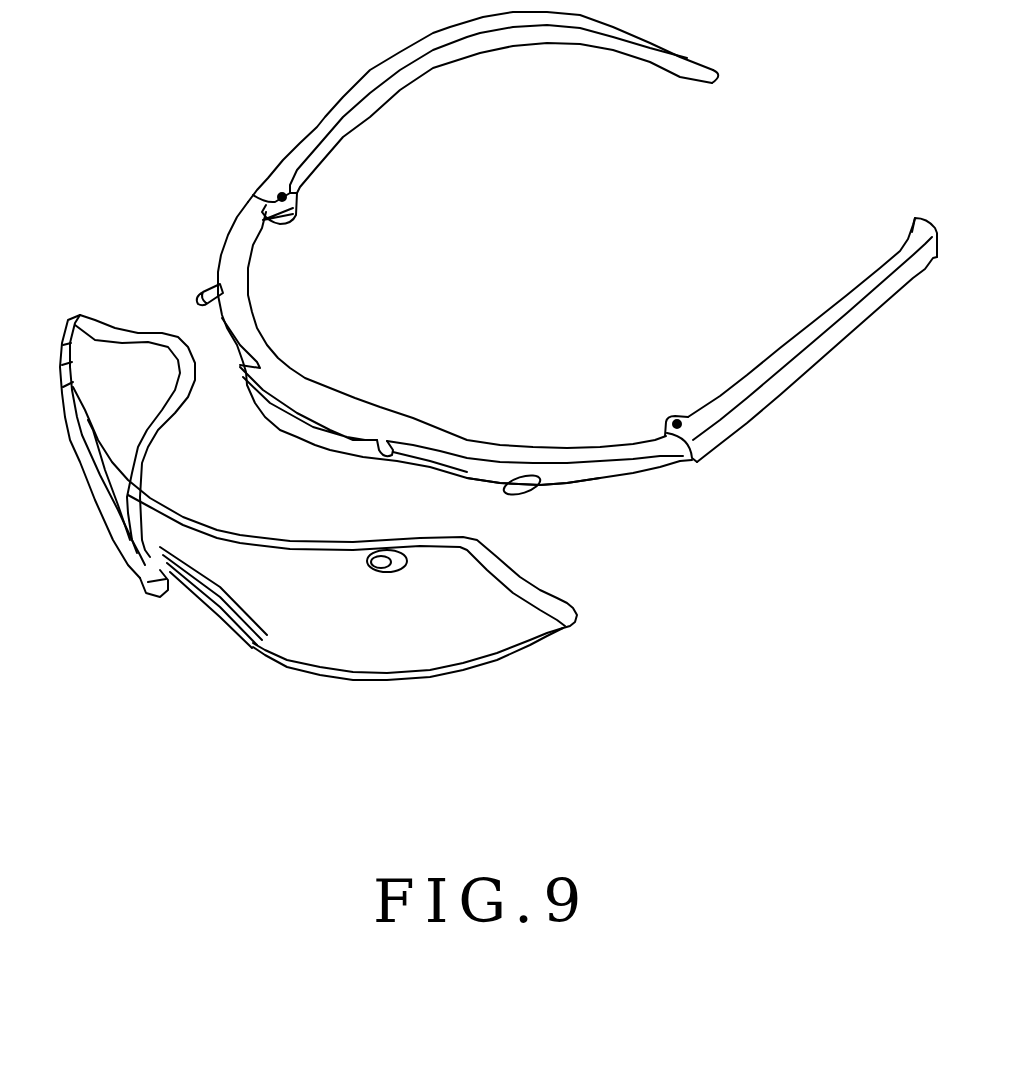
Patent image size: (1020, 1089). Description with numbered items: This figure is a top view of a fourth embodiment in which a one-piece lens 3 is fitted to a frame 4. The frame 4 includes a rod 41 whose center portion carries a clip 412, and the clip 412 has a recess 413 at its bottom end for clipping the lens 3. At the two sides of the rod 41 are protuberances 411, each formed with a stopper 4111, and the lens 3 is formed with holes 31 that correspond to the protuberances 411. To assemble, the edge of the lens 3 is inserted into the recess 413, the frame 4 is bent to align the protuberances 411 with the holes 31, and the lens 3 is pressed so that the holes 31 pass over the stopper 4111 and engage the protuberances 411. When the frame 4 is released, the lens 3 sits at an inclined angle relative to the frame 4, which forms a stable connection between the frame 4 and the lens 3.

The lens 3 is at (497, 613).
The holes 31 is at (380, 563).
The frame 4 is at (288, 264).
The rod 41 is at (623, 453).
The protuberances 411 is at (532, 475).
The stopper 4111 is at (515, 485).
The clip 412 is at (292, 402).
The recess 413 is at (382, 437).